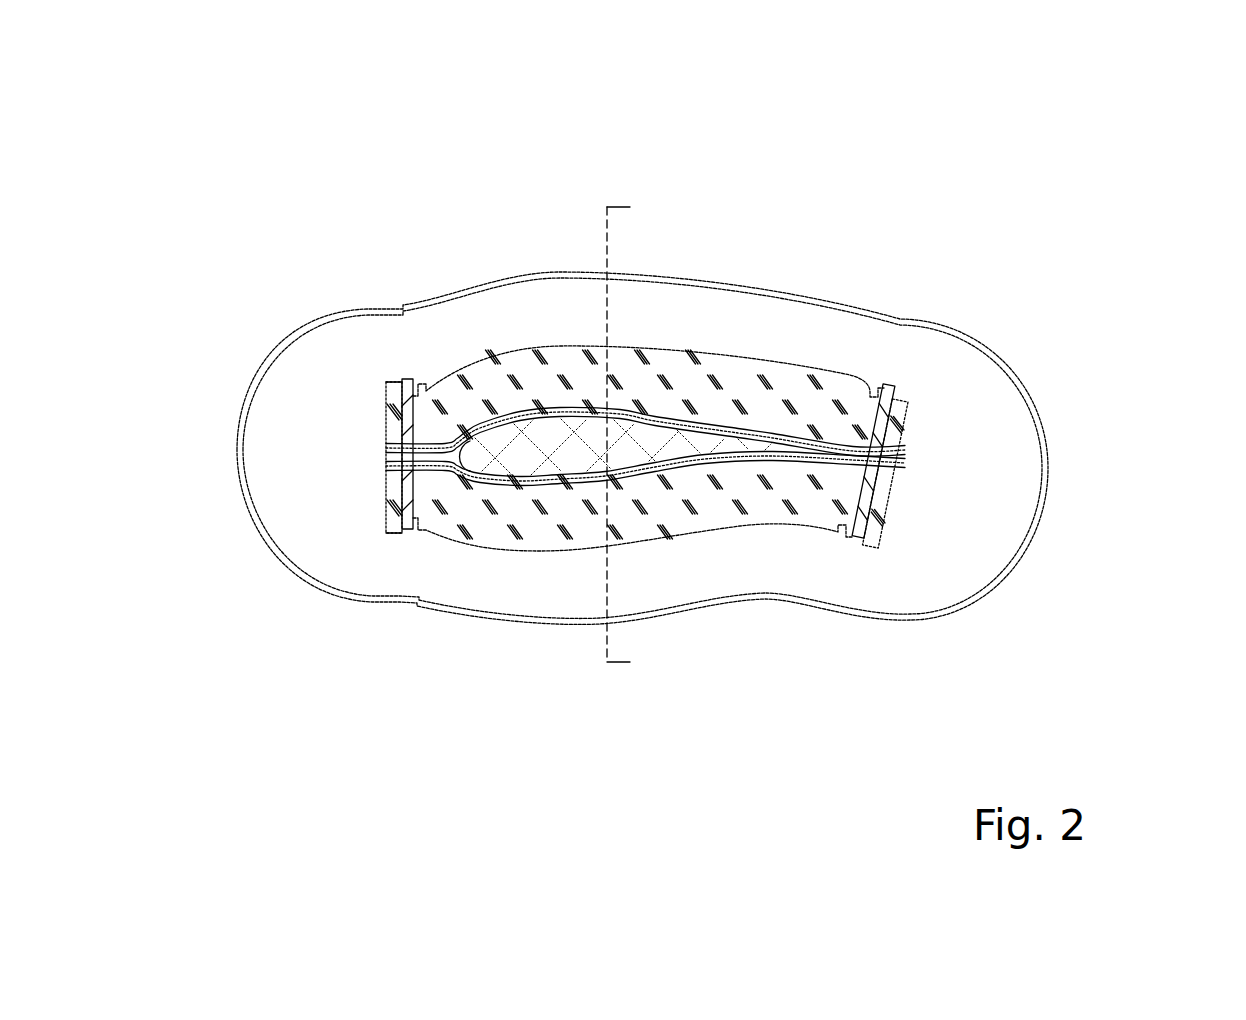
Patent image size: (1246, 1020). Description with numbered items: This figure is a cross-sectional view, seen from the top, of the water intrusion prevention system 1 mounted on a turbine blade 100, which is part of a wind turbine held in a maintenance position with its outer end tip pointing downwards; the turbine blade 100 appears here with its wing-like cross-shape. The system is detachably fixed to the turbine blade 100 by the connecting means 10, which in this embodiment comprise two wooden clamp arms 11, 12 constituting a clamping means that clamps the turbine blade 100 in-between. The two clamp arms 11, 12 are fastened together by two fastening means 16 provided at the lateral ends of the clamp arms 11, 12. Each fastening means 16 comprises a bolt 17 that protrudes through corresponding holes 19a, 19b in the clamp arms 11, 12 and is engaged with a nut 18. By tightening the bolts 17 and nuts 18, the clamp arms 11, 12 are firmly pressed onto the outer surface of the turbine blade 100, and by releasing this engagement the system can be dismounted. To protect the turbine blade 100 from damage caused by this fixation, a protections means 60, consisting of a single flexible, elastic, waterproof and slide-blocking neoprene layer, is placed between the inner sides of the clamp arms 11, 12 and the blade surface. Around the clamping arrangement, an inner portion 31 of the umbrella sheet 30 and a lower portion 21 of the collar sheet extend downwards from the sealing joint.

The water intrusion prevention system 1 is at (1079, 159).
The connecting means 10 is at (312, 436).
The clamp arm 11 is at (805, 480).
The clamp arm 12 is at (827, 398).
The fastening means 16 is at (404, 563).
The bolt 17 is at (403, 421).
The nut 18 is at (398, 383).
The hole 19a is at (403, 509).
The hole 19b is at (403, 405).
The lower portion of the collar sheet 21 is at (737, 427).
The umbrella sheet 30 is at (290, 570).
The inner portion of the umbrella sheet 31 is at (677, 423).
The protections means 60 is at (645, 445).
The turbine blade 100 is at (575, 440).